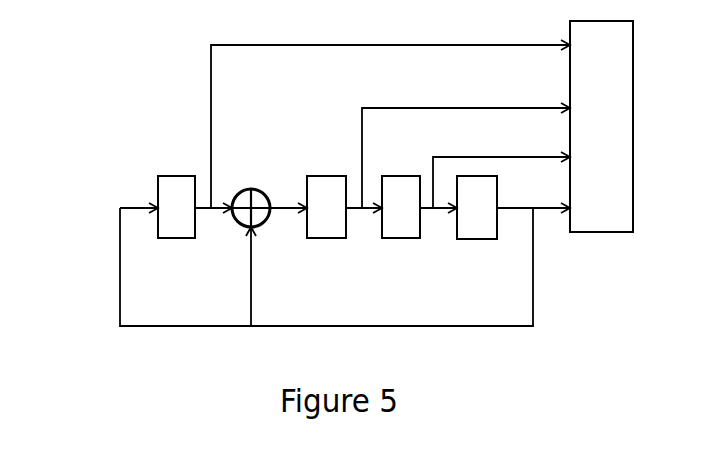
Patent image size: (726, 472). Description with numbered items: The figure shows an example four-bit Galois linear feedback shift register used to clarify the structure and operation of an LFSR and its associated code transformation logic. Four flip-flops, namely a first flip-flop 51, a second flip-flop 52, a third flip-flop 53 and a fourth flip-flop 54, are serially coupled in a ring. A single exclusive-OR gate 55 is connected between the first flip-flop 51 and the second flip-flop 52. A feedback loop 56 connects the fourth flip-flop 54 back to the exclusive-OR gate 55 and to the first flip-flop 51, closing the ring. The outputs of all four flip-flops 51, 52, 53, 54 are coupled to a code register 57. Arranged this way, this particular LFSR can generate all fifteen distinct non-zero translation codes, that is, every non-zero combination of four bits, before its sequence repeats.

The first flip-flop 51 is at (171, 180).
The second flip-flop 52 is at (325, 179).
The third flip-flop 53 is at (402, 238).
The fourth flip-flop 54 is at (488, 239).
The exclusive-OR gate 55 is at (240, 229).
The feedback loop 56 is at (118, 282).
The code register 57 is at (600, 232).